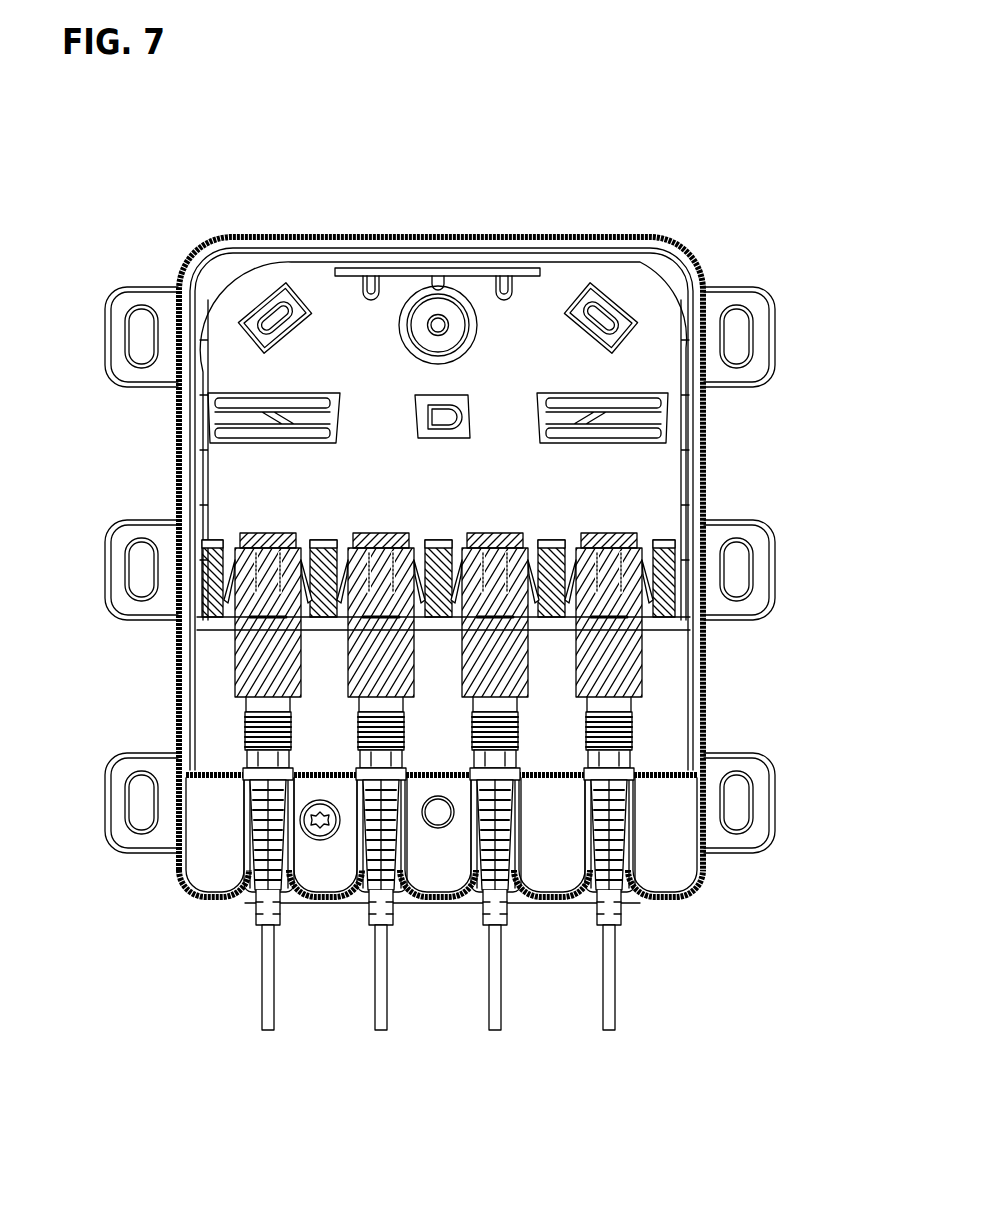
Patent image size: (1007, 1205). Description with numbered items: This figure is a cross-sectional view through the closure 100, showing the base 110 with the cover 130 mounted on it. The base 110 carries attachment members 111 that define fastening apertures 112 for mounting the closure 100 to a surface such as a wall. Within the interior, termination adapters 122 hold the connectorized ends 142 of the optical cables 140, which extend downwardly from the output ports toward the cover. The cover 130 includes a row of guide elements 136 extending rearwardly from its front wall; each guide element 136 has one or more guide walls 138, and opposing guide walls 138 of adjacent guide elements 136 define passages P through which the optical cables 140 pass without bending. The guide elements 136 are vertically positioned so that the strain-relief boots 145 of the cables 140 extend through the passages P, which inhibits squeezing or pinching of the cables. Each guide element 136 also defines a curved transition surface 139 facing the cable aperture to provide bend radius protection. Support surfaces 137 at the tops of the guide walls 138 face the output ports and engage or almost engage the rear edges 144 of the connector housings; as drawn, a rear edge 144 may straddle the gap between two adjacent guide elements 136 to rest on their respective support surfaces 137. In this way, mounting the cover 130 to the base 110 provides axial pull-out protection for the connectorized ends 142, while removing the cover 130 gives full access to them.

The closure 100 is at (166, 266).
The base 110 is at (718, 722).
The attachment members 111 is at (755, 365).
The fastening apertures 112 is at (742, 340).
The termination adapters 122 is at (376, 600).
The cover 130 is at (548, 228).
The guide elements 136 is at (436, 770).
The support surfaces 137 is at (245, 757).
The guide walls 138 is at (283, 920).
The transition surface 139 is at (238, 905).
The optical cables 140 is at (266, 1030).
The connectorized ends 142 is at (262, 708).
The rear edges 144 is at (250, 771).
The strain-relief boots 145 is at (603, 887).
The passages P is at (514, 883).